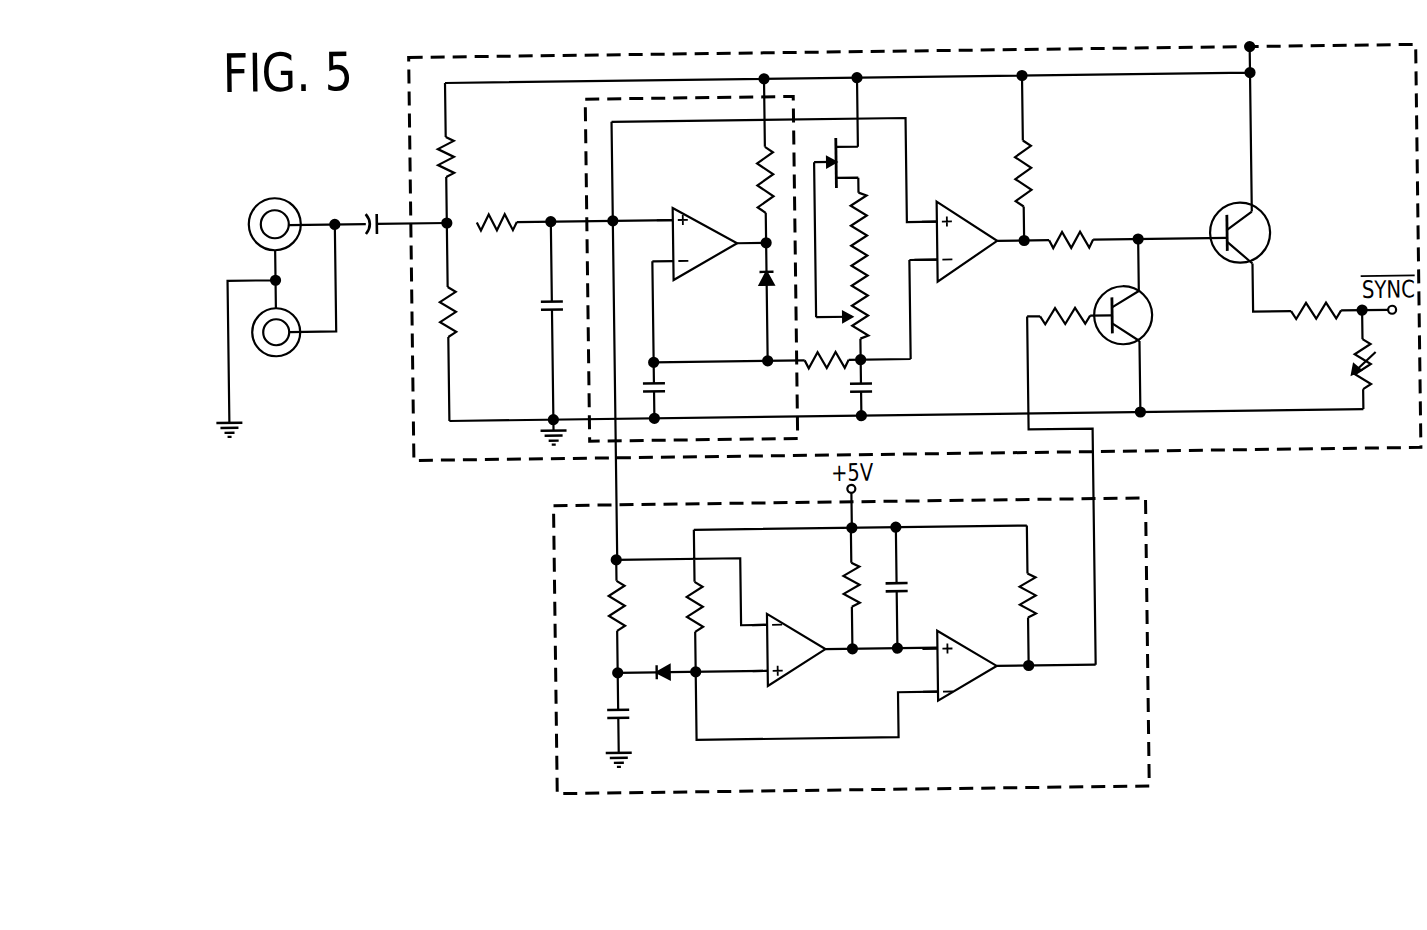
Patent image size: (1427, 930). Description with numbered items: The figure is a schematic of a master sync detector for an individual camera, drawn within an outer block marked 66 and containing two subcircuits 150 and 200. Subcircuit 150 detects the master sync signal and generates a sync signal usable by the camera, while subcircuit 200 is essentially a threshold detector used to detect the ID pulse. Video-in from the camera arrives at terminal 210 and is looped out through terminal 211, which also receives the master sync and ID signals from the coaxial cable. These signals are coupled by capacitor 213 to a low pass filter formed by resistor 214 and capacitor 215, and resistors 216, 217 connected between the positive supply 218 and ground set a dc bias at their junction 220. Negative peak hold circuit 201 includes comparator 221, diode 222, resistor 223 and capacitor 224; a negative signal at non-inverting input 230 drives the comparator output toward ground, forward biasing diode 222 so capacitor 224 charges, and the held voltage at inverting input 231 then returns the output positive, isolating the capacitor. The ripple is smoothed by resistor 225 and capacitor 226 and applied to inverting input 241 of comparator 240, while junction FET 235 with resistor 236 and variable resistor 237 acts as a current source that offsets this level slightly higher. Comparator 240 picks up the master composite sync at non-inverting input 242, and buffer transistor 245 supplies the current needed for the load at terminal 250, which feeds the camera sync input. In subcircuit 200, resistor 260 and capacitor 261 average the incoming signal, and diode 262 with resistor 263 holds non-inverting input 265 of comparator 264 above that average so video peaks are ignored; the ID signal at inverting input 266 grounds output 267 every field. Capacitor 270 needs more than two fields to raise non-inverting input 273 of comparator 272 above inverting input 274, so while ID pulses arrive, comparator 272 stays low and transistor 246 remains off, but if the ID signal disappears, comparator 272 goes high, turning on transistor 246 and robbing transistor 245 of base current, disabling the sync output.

The sync separator block 66 is at (417, 50).
The subcircuit 150 is at (1114, 56).
The subcircuit 200 is at (1140, 556).
The negative peak hold circuit 201 is at (585, 102).
The terminal 210 is at (271, 178).
The terminal 211 is at (278, 354).
The capacitor 213 is at (367, 208).
The resistor 214 is at (479, 214).
The capacitor 215 is at (548, 313).
The resistor 216 is at (453, 152).
The resistor 217 is at (453, 297).
The positive voltage supply 218 is at (1255, 61).
The junction 220 is at (449, 231).
The comparator 221 is at (720, 278).
The diode 222 is at (763, 290).
The resistor 223 is at (758, 162).
The capacitor 224 is at (660, 386).
The resistor 225 is at (842, 336).
The capacitor 226 is at (868, 388).
The non-inverting input 230 is at (671, 218).
The inverting input 231 is at (670, 264).
The junction FET 235 is at (840, 167).
The resistor 236 is at (856, 203).
The variable resistor 237 is at (872, 317).
The comparator 240 is at (962, 270).
The inverting input 241 is at (930, 265).
The non-inverting input 242 is at (928, 228).
The transistor 245 is at (1266, 236).
The transistor 246 is at (1149, 310).
The terminal 250 is at (1379, 356).
The resistor 260 is at (606, 598).
The capacitor 261 is at (609, 710).
The diode 262 is at (665, 666).
The resistor 263 is at (686, 603).
The comparator 264 is at (789, 686).
The non-inverting input 265 is at (760, 669).
The inverting input 266 is at (758, 626).
The output 267 is at (834, 656).
The capacitor 270 is at (898, 592).
The comparator 272 is at (960, 694).
The non-inverting input 273 is at (932, 656).
The inverting input 274 is at (939, 704).